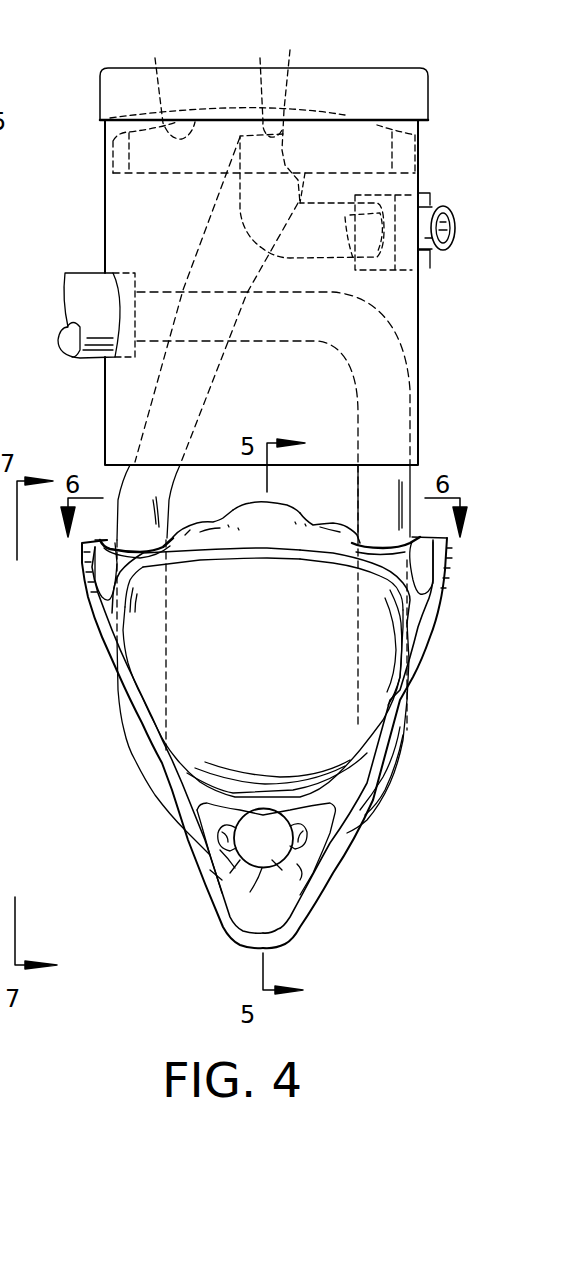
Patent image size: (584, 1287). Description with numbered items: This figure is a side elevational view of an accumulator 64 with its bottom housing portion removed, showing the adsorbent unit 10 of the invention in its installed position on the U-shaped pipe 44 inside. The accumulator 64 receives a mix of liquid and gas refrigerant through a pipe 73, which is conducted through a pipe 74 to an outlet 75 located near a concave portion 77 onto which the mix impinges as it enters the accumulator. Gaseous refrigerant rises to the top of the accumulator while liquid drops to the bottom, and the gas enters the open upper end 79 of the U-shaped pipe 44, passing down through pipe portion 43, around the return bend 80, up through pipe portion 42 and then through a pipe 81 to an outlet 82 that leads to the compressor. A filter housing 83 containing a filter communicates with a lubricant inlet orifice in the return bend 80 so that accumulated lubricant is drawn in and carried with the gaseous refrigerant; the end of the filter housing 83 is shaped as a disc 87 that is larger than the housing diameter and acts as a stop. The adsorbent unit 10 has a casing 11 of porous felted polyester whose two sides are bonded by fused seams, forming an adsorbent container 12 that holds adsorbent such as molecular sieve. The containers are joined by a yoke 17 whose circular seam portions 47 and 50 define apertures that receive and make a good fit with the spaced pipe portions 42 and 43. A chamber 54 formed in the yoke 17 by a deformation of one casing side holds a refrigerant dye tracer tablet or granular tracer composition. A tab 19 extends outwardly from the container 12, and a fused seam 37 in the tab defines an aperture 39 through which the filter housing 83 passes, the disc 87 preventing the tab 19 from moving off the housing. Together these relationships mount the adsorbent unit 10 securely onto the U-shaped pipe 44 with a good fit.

The adsorbent unit 10 is at (84, 680).
The casing 11 is at (422, 623).
The adsorbent container 12 is at (283, 694).
The yoke 17 is at (194, 560).
The tab 19 is at (285, 893).
The fused seam 37 is at (300, 837).
The aperture 39 is at (233, 853).
The pipe portion 42 is at (410, 480).
The pipe portion 43 is at (118, 482).
The U-shaped pipe 44 is at (353, 493).
The circular seam portion 47 is at (357, 543).
The circular seam portion 50 is at (157, 573).
The chamber 54 is at (267, 520).
The accumulator 64 is at (358, 67).
The pipe 73 is at (430, 207).
The pipe 74 is at (305, 173).
The outlet 75 is at (258, 54).
The concave portion 77 is at (166, 80).
The upper end 79 is at (241, 243).
The return bend 80 is at (157, 823).
The pipe 81 is at (268, 330).
The outlet 82 is at (83, 271).
The filter housing 83 is at (240, 893).
The disc 87 is at (287, 853).